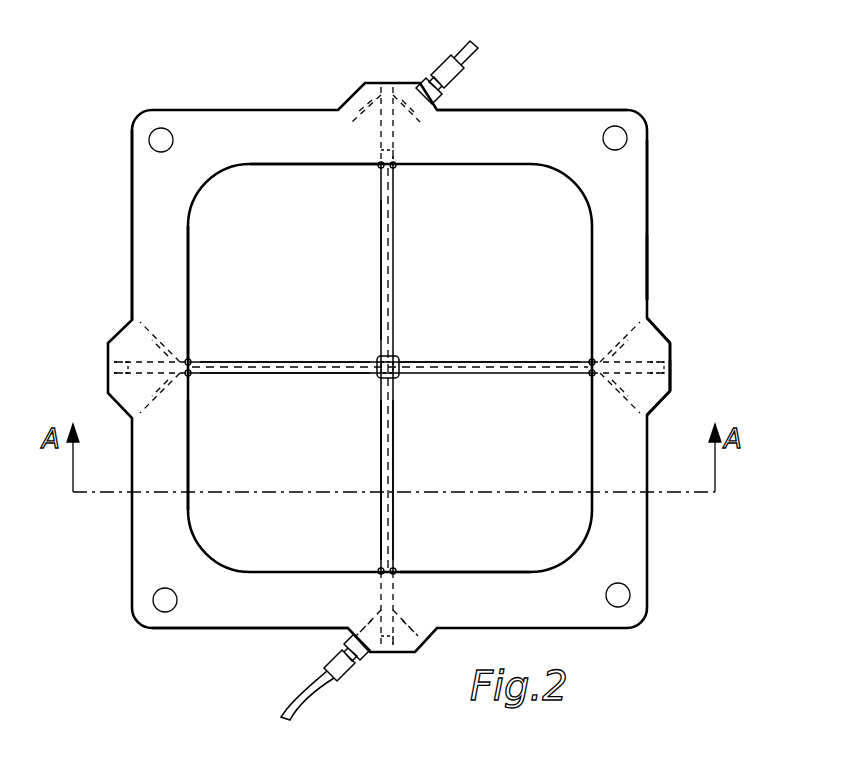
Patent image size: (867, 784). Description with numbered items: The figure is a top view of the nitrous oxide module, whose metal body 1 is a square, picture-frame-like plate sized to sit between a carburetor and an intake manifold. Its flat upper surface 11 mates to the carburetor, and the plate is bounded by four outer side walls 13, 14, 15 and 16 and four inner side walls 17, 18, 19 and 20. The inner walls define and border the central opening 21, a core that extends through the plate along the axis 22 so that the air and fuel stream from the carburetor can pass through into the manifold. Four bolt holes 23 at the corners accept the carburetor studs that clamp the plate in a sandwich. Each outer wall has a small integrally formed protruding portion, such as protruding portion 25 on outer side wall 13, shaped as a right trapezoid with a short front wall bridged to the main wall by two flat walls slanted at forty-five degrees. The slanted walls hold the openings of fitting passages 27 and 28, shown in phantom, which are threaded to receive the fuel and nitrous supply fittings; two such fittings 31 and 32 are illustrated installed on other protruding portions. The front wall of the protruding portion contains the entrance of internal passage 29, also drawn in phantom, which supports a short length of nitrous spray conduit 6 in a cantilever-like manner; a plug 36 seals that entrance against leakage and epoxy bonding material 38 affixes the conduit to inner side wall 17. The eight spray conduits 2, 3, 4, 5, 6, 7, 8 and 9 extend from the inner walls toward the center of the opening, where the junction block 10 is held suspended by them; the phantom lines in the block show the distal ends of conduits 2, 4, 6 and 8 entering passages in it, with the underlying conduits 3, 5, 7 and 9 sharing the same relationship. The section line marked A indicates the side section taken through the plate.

The metal body 1 is at (125, 201).
The spray conduit 2 is at (298, 360).
The spray conduit 3 is at (314, 376).
The spray conduit 4 is at (394, 270).
The spray conduit 5 is at (380, 285).
The nitrous spray conduit 6 is at (480, 376).
The spray conduit 7 is at (458, 360).
The spray conduit 8 is at (395, 464).
The spray conduit 9 is at (380, 470).
The junction block 10 is at (378, 360).
The upper surface 11 is at (642, 200).
The outer side wall 13 is at (647, 242).
The outer side wall 14 is at (522, 110).
The outer side wall 15 is at (132, 275).
The outer side wall 16 is at (264, 630).
The inner side wall 17 is at (592, 260).
The inner side wall 18 is at (265, 168).
The inner side wall 19 is at (190, 262).
The inner side wall 20 is at (472, 572).
The central opening 21 is at (278, 462).
The axis 22 is at (151, 367).
The bolt hole 23 is at (158, 136).
The protruding portion 25 is at (668, 342).
The fitting passage 27 is at (658, 332).
The fitting passage 28 is at (660, 404).
The internal passage 29 is at (672, 364).
The fitting 31 is at (442, 96).
The fitting 32 is at (360, 664).
The plug 36 is at (672, 373).
The epoxy bonding material 38 is at (395, 168).